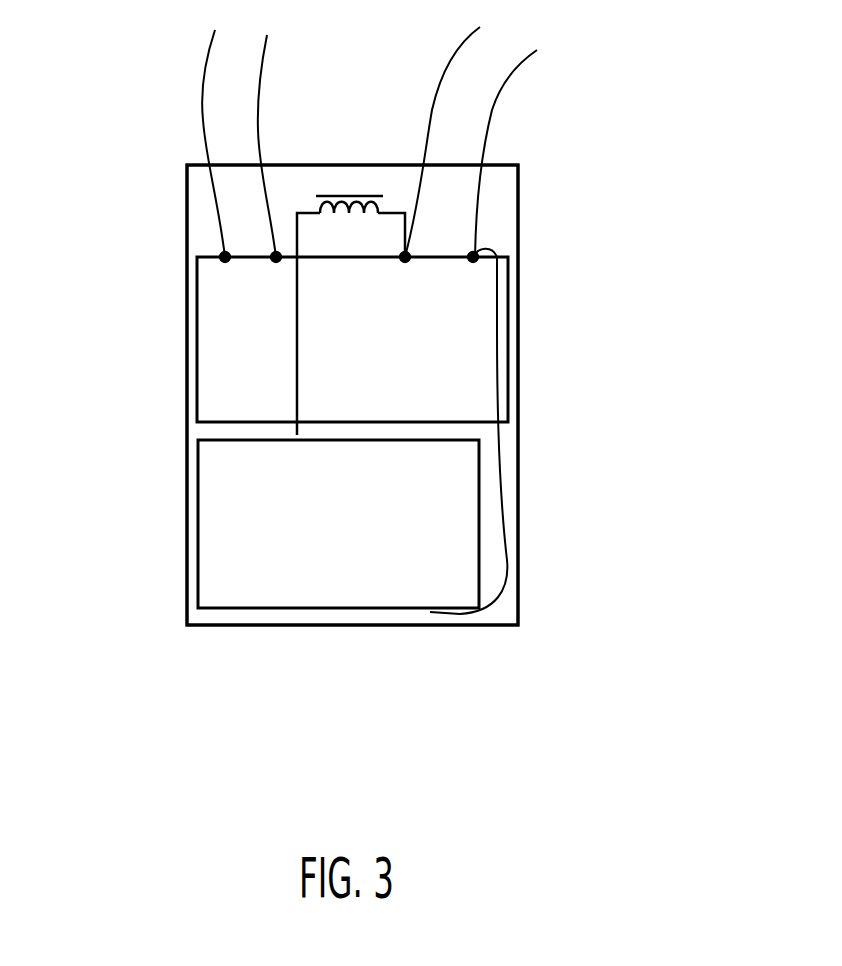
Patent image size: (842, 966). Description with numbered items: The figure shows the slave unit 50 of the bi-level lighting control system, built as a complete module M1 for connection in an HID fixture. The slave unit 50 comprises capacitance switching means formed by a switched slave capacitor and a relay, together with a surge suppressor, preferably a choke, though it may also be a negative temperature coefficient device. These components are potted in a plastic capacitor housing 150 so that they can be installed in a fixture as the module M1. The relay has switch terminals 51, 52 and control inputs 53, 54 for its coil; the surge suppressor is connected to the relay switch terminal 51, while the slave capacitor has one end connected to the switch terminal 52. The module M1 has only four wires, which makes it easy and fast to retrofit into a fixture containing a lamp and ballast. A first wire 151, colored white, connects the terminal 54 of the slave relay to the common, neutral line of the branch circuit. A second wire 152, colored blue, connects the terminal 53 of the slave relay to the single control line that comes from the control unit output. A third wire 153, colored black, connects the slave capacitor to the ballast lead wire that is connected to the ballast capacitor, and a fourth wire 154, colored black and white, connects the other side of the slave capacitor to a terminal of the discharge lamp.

The slave unit 50 is at (353, 395).
The plastic capacitor housing 150 is at (187, 588).
The module M1 is at (518, 470).
The first wire 151 is at (204, 97).
The second wire 152 is at (258, 105).
The third wire 153 is at (450, 62).
The fourth wire 154 is at (493, 103).
The relay switch terminal 51 is at (405, 263).
The switch terminal 52 is at (473, 263).
The control input 53 is at (276, 263).
The control input 54 is at (225, 263).